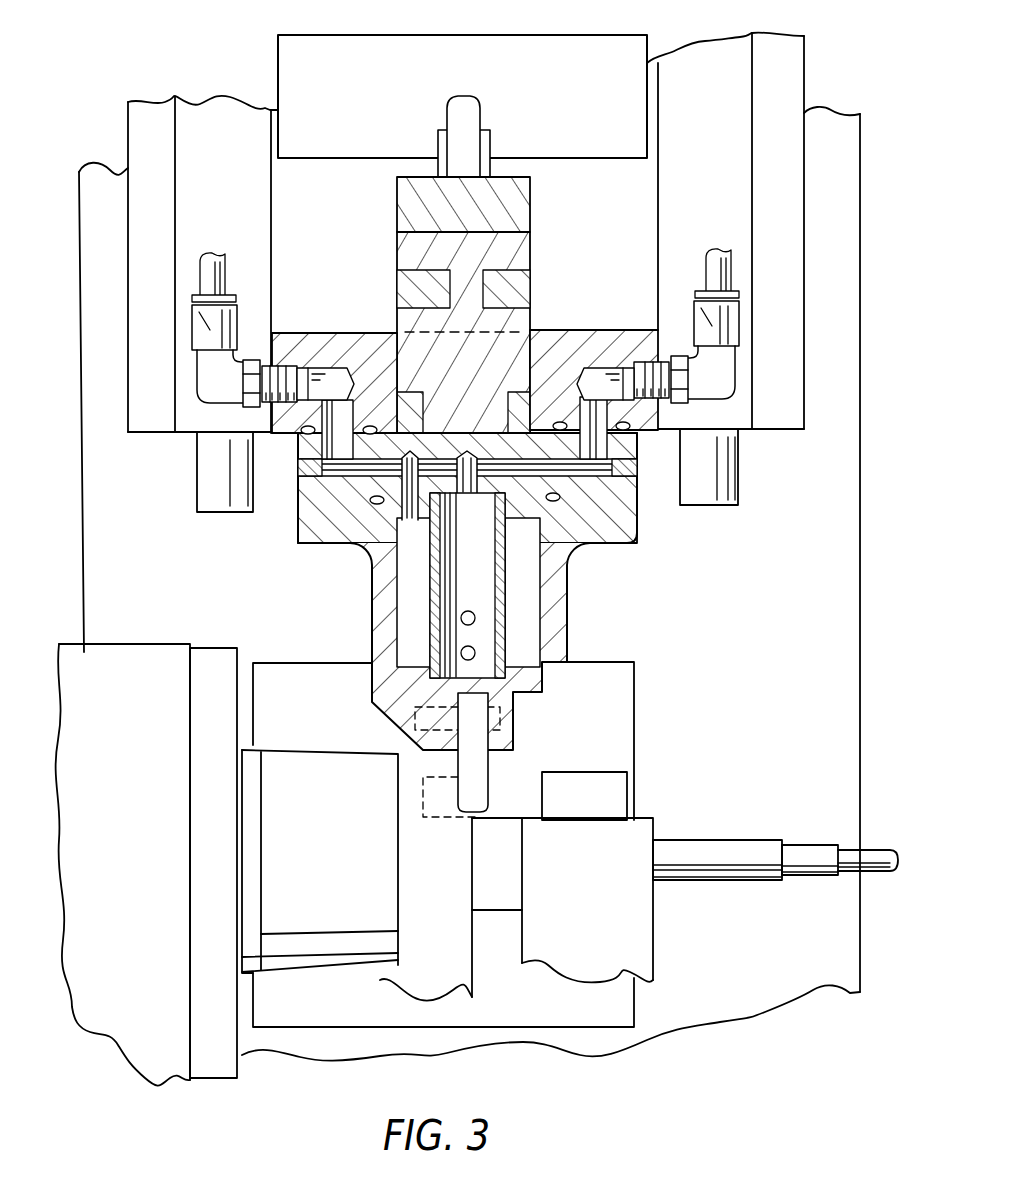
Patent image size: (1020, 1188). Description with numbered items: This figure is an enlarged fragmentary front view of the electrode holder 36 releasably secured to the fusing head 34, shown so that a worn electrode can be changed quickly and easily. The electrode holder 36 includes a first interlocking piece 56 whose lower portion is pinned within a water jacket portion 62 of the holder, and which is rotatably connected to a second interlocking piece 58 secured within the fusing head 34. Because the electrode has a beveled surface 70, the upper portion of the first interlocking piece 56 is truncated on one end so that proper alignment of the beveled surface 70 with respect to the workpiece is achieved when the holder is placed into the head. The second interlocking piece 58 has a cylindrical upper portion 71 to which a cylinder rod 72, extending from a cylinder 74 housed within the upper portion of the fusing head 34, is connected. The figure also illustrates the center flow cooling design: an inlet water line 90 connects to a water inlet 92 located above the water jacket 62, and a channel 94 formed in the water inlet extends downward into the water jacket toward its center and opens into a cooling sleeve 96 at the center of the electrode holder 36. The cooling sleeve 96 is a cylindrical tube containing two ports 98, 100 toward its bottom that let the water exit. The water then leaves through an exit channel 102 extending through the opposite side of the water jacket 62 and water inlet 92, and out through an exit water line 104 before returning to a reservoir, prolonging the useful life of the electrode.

The fusing head 34 is at (128, 130).
The electrode holder 36 is at (264, 565).
The first interlocking piece 56 is at (513, 325).
The second interlocking piece 58 is at (515, 213).
The water jacket portion 62 is at (625, 495).
The beveled surface 70 is at (488, 806).
The cylindrical upper portion 71 is at (490, 145).
The cylinder rod 72 is at (466, 122).
The cylinder 74 is at (626, 97).
The inlet water line 90 is at (722, 312).
The water inlet 92 is at (590, 330).
The channel 94 is at (600, 445).
The cooling sleeve 96 is at (505, 595).
The port 98 is at (477, 618).
The port 100 is at (477, 653).
The exit channel 102 is at (330, 472).
The exit water line 104 is at (190, 322).